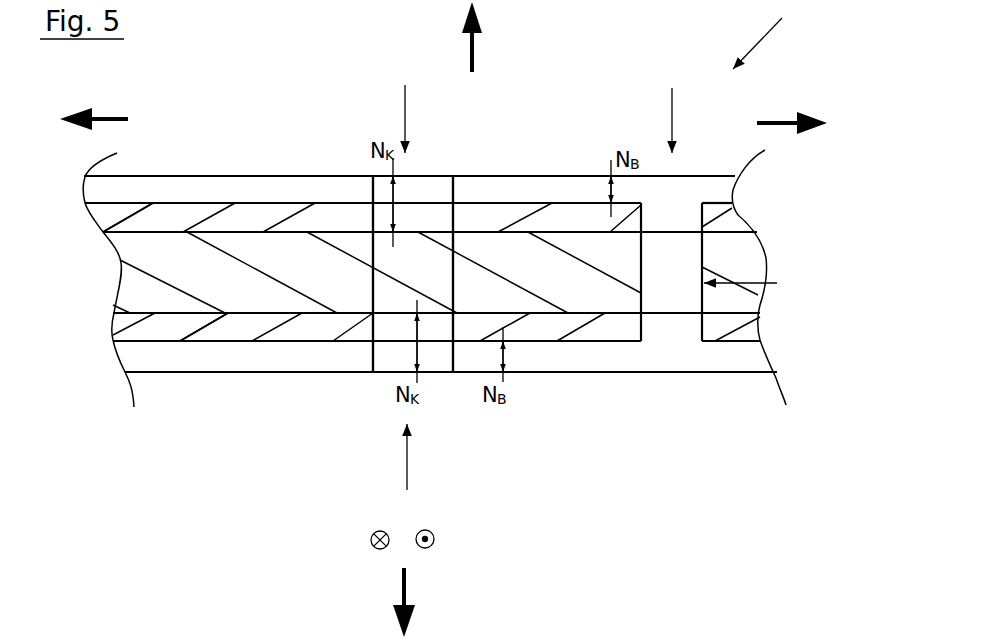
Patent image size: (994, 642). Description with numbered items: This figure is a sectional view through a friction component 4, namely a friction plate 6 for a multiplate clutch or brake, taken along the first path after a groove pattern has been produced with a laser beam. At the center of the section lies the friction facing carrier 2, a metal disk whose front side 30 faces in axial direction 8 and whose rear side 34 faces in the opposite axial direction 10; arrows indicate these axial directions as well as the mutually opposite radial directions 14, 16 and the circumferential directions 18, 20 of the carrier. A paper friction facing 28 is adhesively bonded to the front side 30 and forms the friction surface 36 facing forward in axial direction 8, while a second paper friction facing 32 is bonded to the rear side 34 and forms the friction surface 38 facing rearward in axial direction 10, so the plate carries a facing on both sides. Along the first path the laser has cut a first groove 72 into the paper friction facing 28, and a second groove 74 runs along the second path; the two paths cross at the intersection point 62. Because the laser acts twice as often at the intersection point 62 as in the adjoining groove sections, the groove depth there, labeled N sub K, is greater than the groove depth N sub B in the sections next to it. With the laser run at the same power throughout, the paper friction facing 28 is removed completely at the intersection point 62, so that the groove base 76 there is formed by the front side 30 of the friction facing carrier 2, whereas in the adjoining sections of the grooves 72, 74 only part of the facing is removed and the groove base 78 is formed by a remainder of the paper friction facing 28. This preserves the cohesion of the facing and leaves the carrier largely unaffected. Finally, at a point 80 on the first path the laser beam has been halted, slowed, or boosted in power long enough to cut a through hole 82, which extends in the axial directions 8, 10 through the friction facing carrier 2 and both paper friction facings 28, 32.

The friction facing carrier 2 is at (737, 260).
The friction component 4 is at (773, 34).
The friction plate 6 is at (773, 34).
The axial direction 8 is at (468, 50).
The axial direction 10 is at (398, 586).
The radial direction 14 is at (110, 117).
The radial direction 16 is at (772, 118).
The circumferential direction 18 is at (437, 537).
The circumferential direction 20 is at (368, 538).
The paper friction facing 28 is at (728, 214).
The front side 30 is at (147, 229).
The paper friction facing 32 is at (728, 322).
The rear side 34 is at (182, 316).
The friction surface 36 is at (212, 175).
The friction surface 38 is at (220, 375).
The intersection point 62 is at (405, 290).
The first groove 72 is at (323, 183).
The second groove 74 is at (385, 188).
The groove base 76 is at (422, 232).
The groove base 78 is at (249, 202).
The point 80 is at (674, 107).
The through hole 82 is at (756, 286).